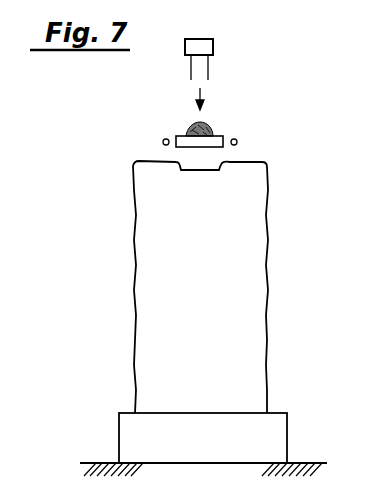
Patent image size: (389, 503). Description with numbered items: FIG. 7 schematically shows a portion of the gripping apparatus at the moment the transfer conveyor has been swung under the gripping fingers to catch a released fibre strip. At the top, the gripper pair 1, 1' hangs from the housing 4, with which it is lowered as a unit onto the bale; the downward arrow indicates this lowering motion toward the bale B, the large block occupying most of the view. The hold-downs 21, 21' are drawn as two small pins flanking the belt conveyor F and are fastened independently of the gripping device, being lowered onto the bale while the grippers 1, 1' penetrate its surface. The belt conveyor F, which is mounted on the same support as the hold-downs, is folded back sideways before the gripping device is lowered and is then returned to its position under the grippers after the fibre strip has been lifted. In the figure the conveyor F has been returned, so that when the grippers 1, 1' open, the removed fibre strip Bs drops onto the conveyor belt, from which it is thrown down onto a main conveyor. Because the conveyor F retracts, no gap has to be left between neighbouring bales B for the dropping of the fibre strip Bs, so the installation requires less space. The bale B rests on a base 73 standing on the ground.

The housing 4 is at (203, 46).
The gripper 1 is at (171, 70).
The gripper 1' is at (231, 70).
The fibre strip Bs is at (190, 130).
The belt conveyor F is at (218, 140).
The hold-down 21 is at (132, 143).
The hold-down 21' is at (262, 143).
The bale B is at (200, 287).
The base 73 is at (265, 439).